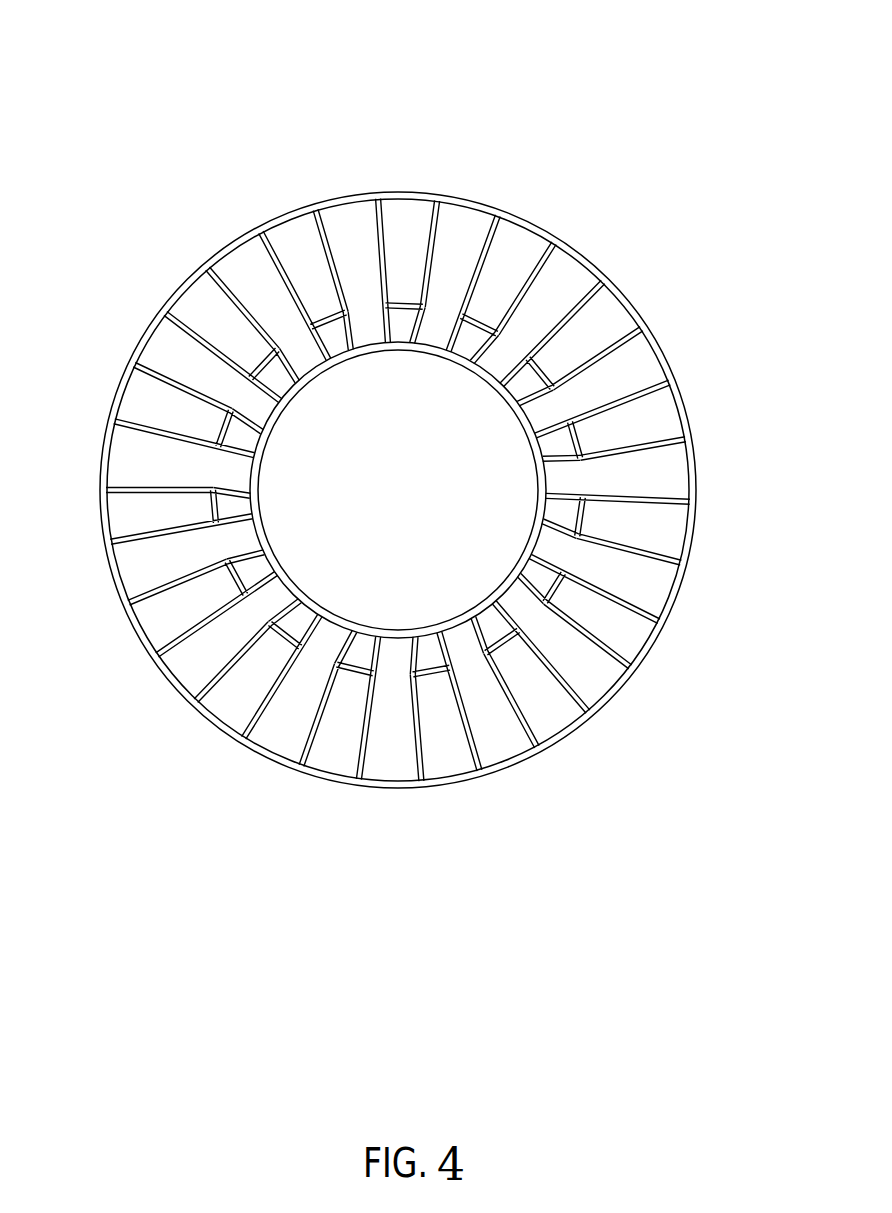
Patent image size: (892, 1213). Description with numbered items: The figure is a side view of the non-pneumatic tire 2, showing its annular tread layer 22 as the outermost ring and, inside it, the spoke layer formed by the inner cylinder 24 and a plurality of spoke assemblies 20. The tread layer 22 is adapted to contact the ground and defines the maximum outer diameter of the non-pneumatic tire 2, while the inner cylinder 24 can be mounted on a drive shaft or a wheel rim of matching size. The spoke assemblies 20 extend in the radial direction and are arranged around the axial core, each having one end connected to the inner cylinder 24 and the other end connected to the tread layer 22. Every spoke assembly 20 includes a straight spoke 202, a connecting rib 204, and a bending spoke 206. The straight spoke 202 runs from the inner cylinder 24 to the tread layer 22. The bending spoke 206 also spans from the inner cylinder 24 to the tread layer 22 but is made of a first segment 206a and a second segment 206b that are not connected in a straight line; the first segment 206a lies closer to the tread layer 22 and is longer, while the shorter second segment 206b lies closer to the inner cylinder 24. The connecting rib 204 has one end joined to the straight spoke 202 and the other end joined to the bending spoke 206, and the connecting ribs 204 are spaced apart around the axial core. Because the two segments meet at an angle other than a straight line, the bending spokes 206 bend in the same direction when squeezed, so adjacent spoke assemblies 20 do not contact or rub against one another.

The non-pneumatic tire 2 is at (167, 205).
The spoke assembly 20 is at (743, 53).
The tread layer 22 is at (285, 214).
The inner cylinder 24 is at (539, 447).
The straight spoke 202 is at (635, 397).
The connecting rib 204 is at (563, 404).
The bending spoke 206 is at (618, 110).
The first segment 206a is at (585, 366).
The second segment 206b is at (531, 395).